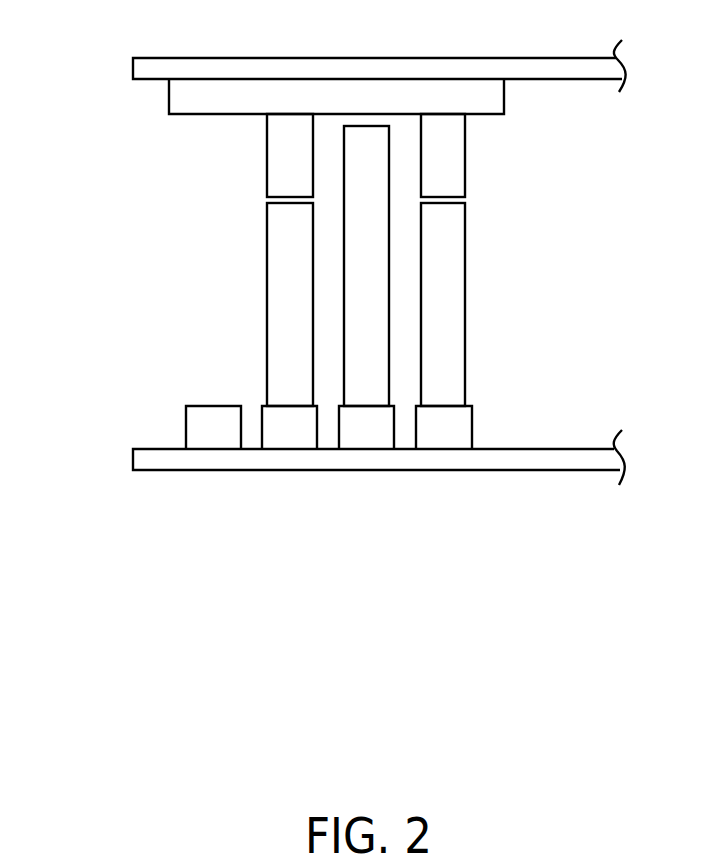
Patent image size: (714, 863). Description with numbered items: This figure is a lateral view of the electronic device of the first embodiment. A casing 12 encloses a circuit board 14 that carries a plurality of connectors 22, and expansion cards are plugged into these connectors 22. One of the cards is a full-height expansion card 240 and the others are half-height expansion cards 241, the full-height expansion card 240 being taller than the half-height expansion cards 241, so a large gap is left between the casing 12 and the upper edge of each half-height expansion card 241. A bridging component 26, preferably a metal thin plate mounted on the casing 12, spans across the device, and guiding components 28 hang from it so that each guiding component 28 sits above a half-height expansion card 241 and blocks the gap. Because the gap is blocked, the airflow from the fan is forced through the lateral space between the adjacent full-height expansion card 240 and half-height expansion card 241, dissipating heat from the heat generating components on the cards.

The casing 12 is at (155, 62).
The circuit board 14 is at (155, 453).
The connectors 22 is at (215, 441).
The bridging component 26 is at (181, 98).
The guiding component 28 is at (282, 162).
The full-height expansion card 240 is at (357, 261).
The half-height expansion card 241 is at (282, 322).